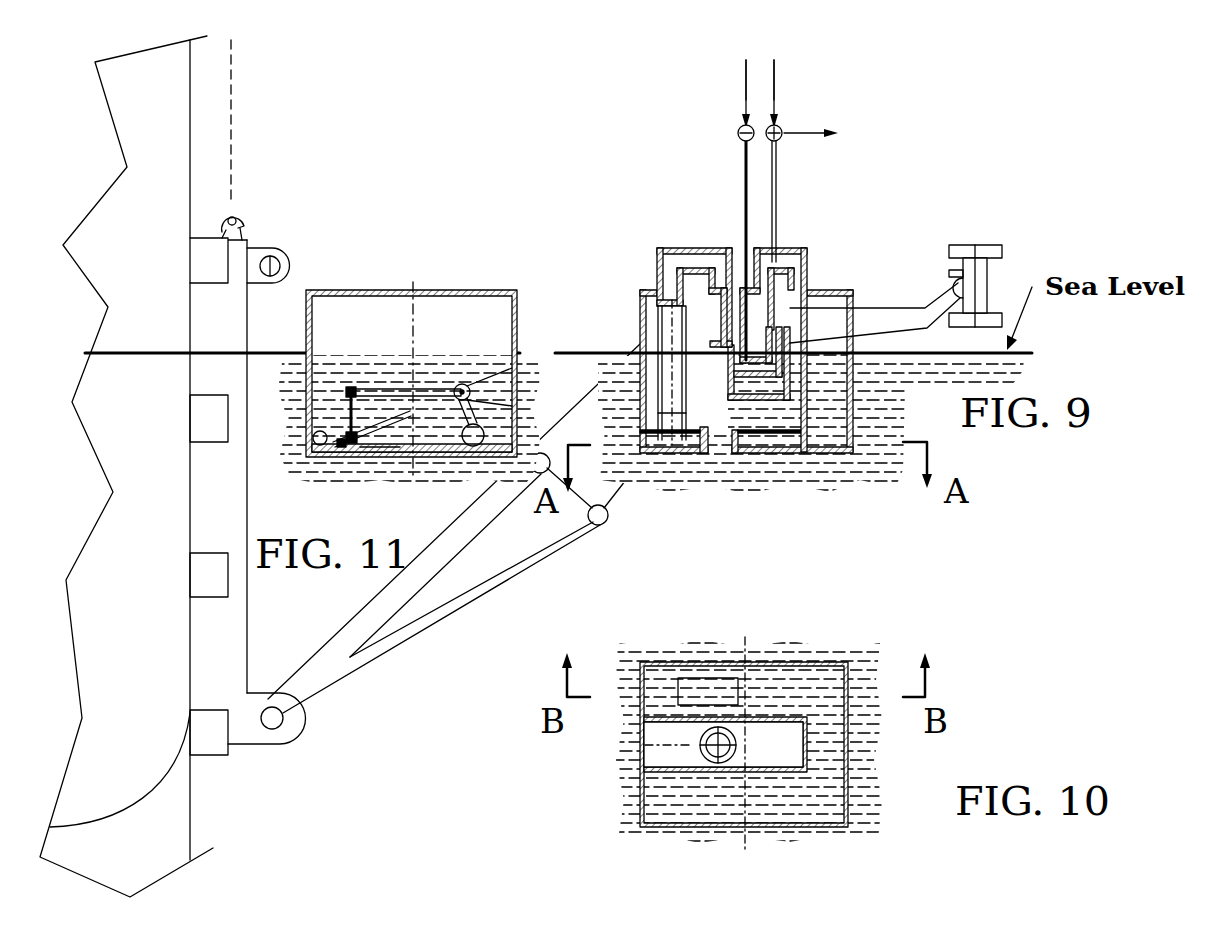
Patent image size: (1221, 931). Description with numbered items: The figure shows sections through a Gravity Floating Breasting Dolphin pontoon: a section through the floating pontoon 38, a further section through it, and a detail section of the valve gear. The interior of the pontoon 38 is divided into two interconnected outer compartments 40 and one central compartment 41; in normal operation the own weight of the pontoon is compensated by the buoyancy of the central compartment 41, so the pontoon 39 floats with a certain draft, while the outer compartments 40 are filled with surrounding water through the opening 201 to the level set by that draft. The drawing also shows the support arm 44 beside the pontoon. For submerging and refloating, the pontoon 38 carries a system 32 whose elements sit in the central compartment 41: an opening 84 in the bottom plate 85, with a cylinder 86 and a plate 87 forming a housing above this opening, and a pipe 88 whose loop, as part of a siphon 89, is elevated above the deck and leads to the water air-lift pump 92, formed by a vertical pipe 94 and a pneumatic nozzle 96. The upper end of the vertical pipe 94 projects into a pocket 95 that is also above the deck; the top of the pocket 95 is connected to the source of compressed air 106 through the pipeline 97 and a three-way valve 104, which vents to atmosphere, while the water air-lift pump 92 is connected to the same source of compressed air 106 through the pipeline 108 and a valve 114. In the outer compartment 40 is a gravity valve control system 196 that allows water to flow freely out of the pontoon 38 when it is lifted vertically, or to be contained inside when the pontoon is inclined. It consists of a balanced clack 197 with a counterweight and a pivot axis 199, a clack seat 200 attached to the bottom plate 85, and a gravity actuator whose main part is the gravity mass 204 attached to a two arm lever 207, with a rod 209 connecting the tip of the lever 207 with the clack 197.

In FIG. 9, the submerging and refloating system 32 is at (915, 108).
In FIG. 11, the floating pontoon 38 is at (428, 290).
In FIG. 11, the pontoon 39 is at (430, 188).
In FIG. 10, the outer compartment 40 is at (805, 680).
In FIG. 10, the central compartment 41 is at (725, 743).
In FIG. 11, the support arm 44 is at (443, 617).
In FIG. 9, the opening 84 is at (722, 453).
In FIG. 9, the bottom plate 85 is at (760, 453).
In FIG. 9, the cylinder 86 is at (650, 452).
In FIG. 9, the plate 87 is at (737, 430).
In FIG. 9, the pipe 88 is at (714, 323).
In FIG. 9, the siphon 89 is at (695, 248).
In FIG. 9, the water air-lift pump 92 is at (785, 300).
In FIG. 9, the vertical pipe 94 is at (806, 262).
In FIG. 9, the pocket 95 is at (781, 266).
In FIG. 9, the pneumatic nozzle 96 is at (783, 335).
In FIG. 9, the pipeline 97 is at (777, 212).
In FIG. 9, the three-way valve 104 is at (779, 140).
In FIG. 9, the source of compressed air 106 is at (745, 80).
In FIG. 9, the pipeline 108 is at (745, 192).
In FIG. 9, the valve 114 is at (737, 133).
In FIG. 11, the gravity valve control system 196 is at (495, 347).
In FIG. 11, the balanced clack 197 is at (400, 417).
In FIG. 11, the pivot axis 199 is at (330, 447).
In FIG. 11, the clack seat 200 is at (348, 452).
In FIG. 11, the opening 201 is at (385, 452).
In FIG. 10, the opening 201 is at (690, 688).
In FIG. 11, the gravity mass 204 is at (482, 427).
In FIG. 11, the two arm lever 207 is at (423, 390).
In FIG. 11, the rod 209 is at (342, 430).